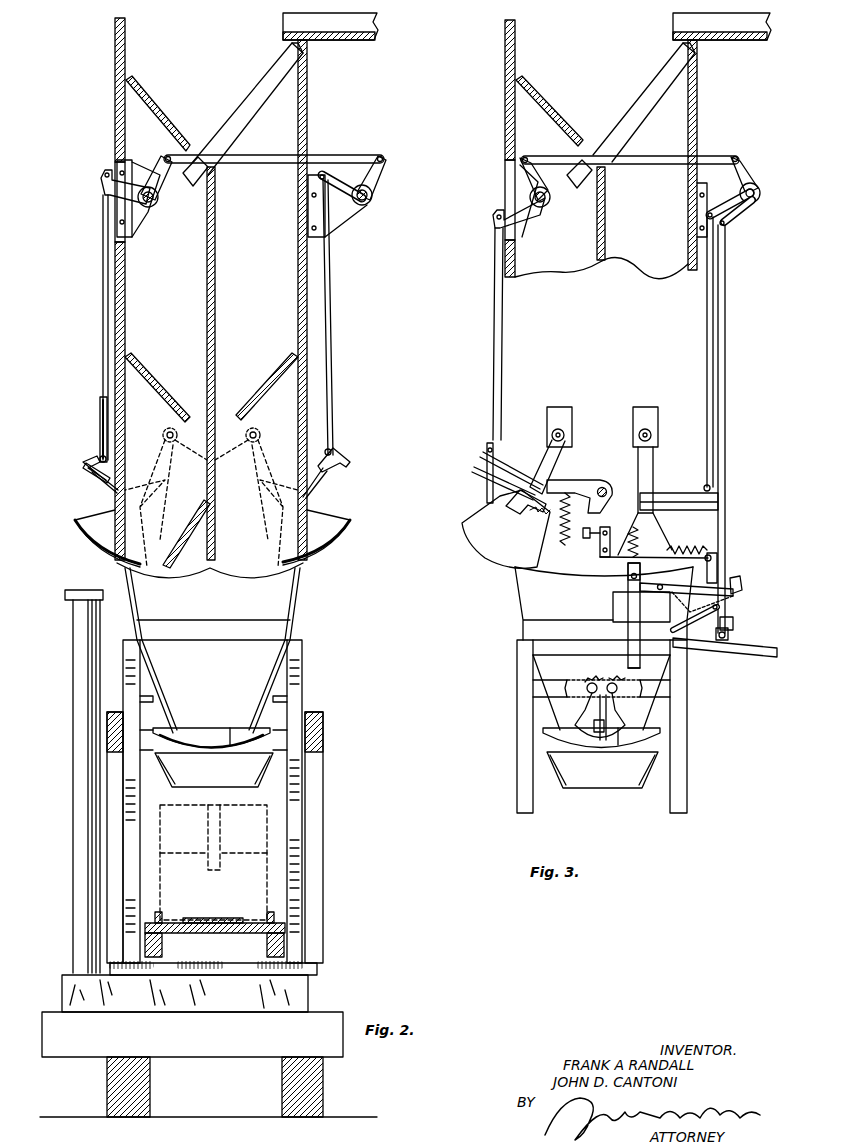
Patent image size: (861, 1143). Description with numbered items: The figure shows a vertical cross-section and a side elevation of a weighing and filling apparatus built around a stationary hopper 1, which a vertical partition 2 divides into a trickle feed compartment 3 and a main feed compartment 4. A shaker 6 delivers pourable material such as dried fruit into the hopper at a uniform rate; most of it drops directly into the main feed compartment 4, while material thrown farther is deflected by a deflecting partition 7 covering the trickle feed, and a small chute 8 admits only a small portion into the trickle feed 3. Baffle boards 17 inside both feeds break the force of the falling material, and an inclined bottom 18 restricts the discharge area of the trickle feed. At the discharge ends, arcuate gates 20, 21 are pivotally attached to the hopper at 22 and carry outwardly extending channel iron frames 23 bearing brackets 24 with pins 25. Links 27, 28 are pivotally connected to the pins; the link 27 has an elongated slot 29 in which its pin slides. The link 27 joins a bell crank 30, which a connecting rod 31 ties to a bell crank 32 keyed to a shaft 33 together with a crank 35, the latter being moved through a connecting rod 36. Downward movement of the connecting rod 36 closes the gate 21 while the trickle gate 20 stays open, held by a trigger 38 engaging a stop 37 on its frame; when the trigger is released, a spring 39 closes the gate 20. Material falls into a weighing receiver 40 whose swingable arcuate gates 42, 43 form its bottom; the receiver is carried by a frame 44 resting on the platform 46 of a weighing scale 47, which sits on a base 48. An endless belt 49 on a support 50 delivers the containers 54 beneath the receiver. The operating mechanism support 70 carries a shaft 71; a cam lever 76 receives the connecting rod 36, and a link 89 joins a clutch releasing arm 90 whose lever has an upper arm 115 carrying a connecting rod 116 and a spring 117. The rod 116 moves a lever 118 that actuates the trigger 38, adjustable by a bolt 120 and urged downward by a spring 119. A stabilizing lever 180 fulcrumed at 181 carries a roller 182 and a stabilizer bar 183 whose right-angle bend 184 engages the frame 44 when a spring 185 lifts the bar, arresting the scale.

In FIG. 2, the hopper 1 is at (115, 97).
In FIG. 3, the hopper 1 is at (505, 103).
In FIG. 2, the vertical partition 2 is at (215, 276).
In FIG. 3, the vertical partition 2 is at (605, 210).
In FIG. 2, the trickle feed compartment 3 is at (167, 303).
In FIG. 3, the trickle feed compartment 3 is at (565, 233).
In FIG. 2, the main feed compartment 4 is at (254, 303).
In FIG. 3, the main feed compartment 4 is at (652, 233).
In FIG. 2, the shaker 6 is at (358, 40).
In FIG. 3, the shaker 6 is at (752, 40).
In FIG. 2, the deflecting partition 7 is at (160, 115).
In FIG. 3, the deflecting partition 7 is at (548, 112).
In FIG. 2, the small chute 8 is at (258, 88).
In FIG. 3, the small chute 8 is at (652, 84).
In FIG. 2, the baffle boards 17 is at (158, 385).
In FIG. 2, the inclined bottom 18 is at (192, 528).
In FIG. 2, the arcuate gate 20 is at (86, 540).
In FIG. 2, the arcuate gate 21 is at (340, 540).
In FIG. 2, the pivot 22 is at (177, 443).
In FIG. 3, the pivot 22 is at (640, 435).
In FIG. 2, the channel iron frames 23 is at (104, 483).
In FIG. 3, the channel iron frames 23 is at (477, 472).
In FIG. 2, the brackets 24 is at (88, 473).
In FIG. 3, the brackets 24 is at (700, 488).
In FIG. 2, the pins 25 is at (100, 458).
In FIG. 3, the pins 25 is at (500, 465).
In FIG. 2, the link 27 is at (103, 328).
In FIG. 3, the link 27 is at (493, 323).
In FIG. 2, the link 28 is at (333, 330).
In FIG. 3, the link 28 is at (713, 308).
In FIG. 2, the elongated slot 29 is at (100, 415).
In FIG. 3, the elongated slot 29 is at (487, 496).
In FIG. 2, the bell crank 30 is at (158, 187).
In FIG. 3, the bell crank 30 is at (530, 183).
In FIG. 2, the connecting rod 31 is at (266, 165).
In FIG. 3, the connecting rod 31 is at (650, 157).
In FIG. 2, the bell crank 32 is at (372, 190).
In FIG. 3, the bell crank 32 is at (758, 190).
In FIG. 2, the shaft 33 is at (372, 203).
In FIG. 3, the shaft 33 is at (760, 192).
In FIG. 3, the crank 35 is at (740, 212).
In FIG. 3, the connecting rod 36 is at (725, 397).
In FIG. 3, the stop 37 is at (506, 512).
In FIG. 3, the trigger 38 is at (582, 481).
In FIG. 3, the spring 39 is at (541, 521).
In FIG. 2, the weighing receiver 40 is at (212, 650).
In FIG. 3, the weighing receiver 40 is at (604, 648).
In FIG. 2, the arcuate gate 42 is at (196, 742).
In FIG. 3, the arcuate gate 42 is at (585, 745).
In FIG. 2, the arcuate gate 43 is at (232, 742).
In FIG. 3, the arcuate gate 43 is at (620, 745).
In FIG. 2, the frame 44 is at (302, 830).
In FIG. 3, the frame 44 is at (687, 716).
In FIG. 2, the platform 46 is at (320, 966).
In FIG. 2, the weighing scale 47 is at (300, 990).
In FIG. 2, the base 48 is at (208, 1064).
In FIG. 2, the endless belt 49 is at (230, 918).
In FIG. 2, the support 50 is at (242, 933).
In FIG. 2, the containers 54 is at (245, 825).
In FIG. 3, the operating mechanism support 70 is at (613, 606).
In FIG. 3, the shaft 71 is at (718, 575).
In FIG. 3, the cam lever 76 is at (730, 650).
In FIG. 3, the link 89 is at (695, 620).
In FIG. 3, the clutch releasing arm 90 is at (735, 620).
In FIG. 3, the upper arm 115 is at (712, 558).
In FIG. 3, the connecting rod 116 is at (650, 555).
In FIG. 3, the spring 117 is at (688, 546).
In FIG. 3, the lever 118 is at (612, 530).
In FIG. 3, the spring 119 is at (560, 540).
In FIG. 3, the bolt 120 is at (587, 528).
In FIG. 3, the lever 180 is at (676, 606).
In FIG. 3, the fulcrum 181 is at (658, 590).
In FIG. 3, the roller 182 is at (742, 583).
In FIG. 3, the stabilizer bar 183 is at (628, 631).
In FIG. 3, the right-angle bend 184 is at (628, 665).
In FIG. 3, the spring 185 is at (628, 577).